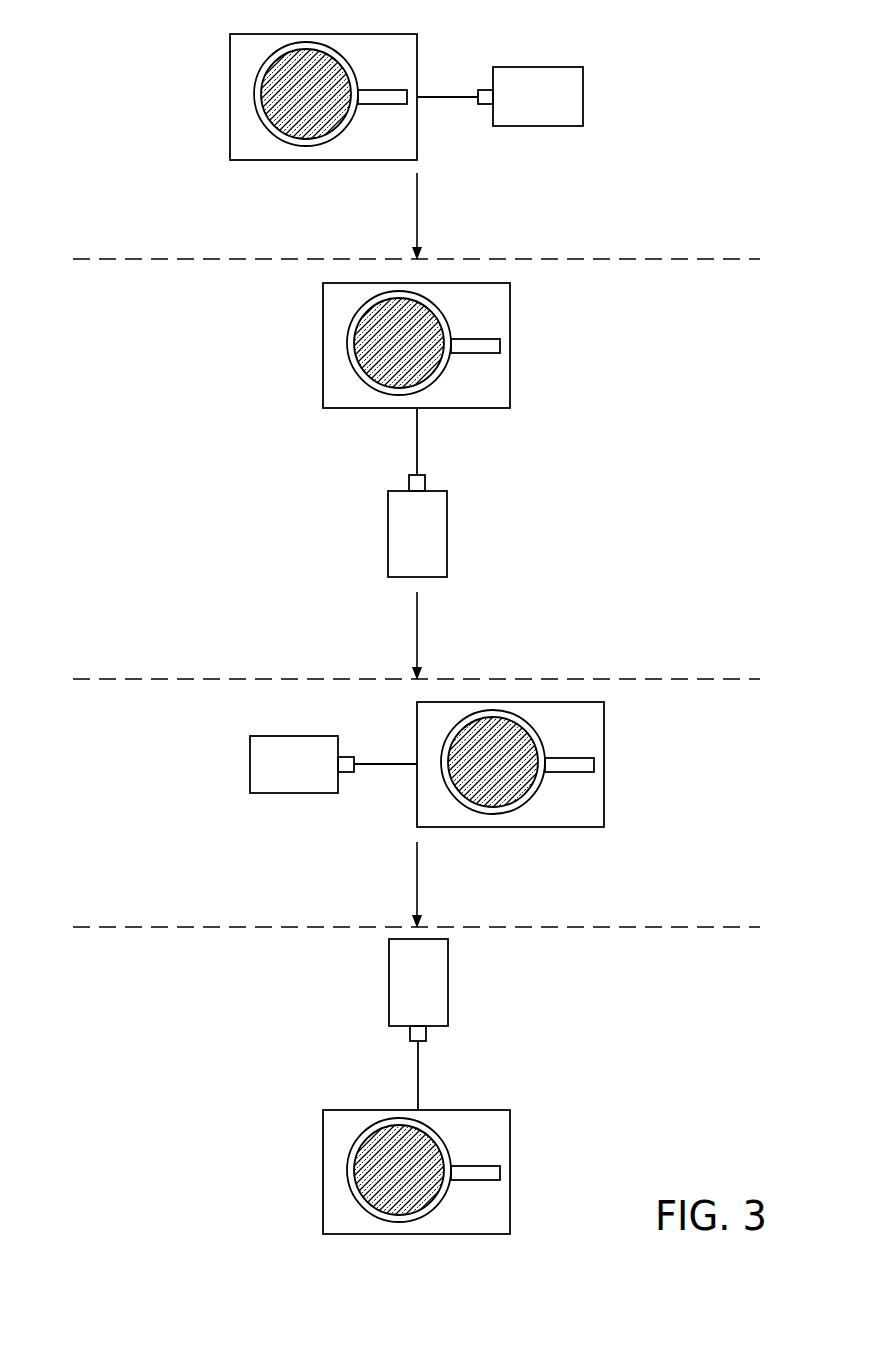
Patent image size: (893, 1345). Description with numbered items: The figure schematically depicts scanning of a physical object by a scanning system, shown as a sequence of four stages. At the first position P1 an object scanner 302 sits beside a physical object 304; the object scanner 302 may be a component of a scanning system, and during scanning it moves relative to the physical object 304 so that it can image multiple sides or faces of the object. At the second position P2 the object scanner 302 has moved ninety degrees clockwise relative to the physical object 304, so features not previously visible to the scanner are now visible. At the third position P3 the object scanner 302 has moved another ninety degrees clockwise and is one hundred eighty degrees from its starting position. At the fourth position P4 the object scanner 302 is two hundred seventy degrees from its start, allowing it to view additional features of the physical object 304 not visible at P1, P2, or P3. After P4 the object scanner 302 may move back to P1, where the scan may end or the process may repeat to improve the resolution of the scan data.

The object scanner 302 is at (583, 97).
The physical object 304 is at (262, 95).
The position 1 P1 is at (198, 31).
The position 2 P2 is at (198, 309).
The position 3 P3 is at (198, 729).
The position 4 P4 is at (198, 980).